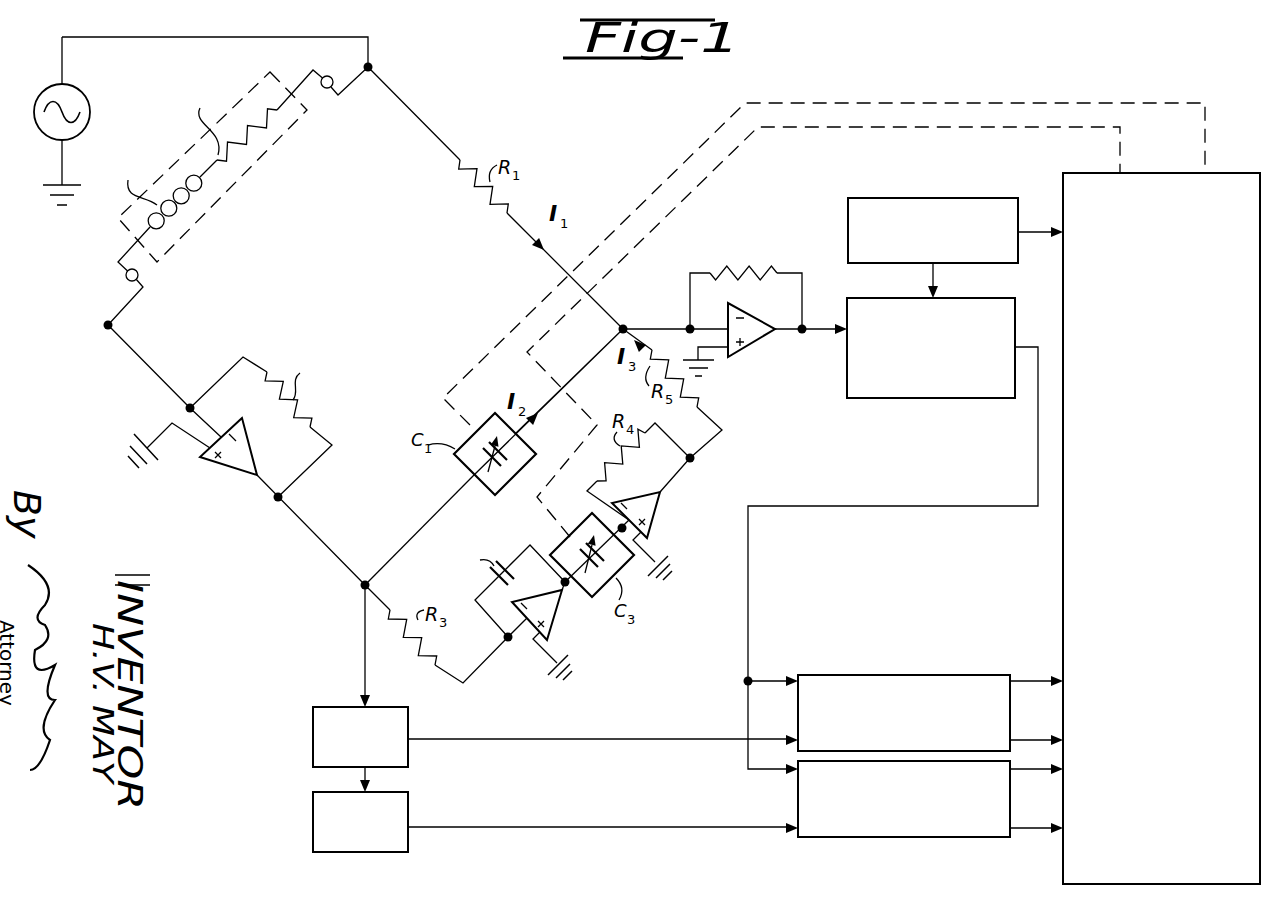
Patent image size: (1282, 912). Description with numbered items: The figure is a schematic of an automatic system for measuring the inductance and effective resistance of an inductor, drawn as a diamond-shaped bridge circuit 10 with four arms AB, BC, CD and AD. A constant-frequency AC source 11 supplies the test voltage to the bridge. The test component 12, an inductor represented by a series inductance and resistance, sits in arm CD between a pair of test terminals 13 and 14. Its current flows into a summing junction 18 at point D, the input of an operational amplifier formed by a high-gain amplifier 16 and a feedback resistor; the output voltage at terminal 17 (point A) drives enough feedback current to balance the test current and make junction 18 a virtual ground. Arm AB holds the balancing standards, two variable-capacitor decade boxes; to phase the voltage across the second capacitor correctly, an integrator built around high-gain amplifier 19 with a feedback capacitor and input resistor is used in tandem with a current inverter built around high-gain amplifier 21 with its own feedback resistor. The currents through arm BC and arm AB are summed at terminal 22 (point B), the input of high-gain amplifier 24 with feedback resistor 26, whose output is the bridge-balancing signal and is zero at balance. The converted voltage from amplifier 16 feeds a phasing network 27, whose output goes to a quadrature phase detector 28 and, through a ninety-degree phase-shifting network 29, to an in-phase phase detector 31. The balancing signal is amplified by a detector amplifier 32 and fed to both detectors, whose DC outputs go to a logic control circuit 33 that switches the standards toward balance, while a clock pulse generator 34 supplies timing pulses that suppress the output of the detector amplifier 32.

The bridge circuit 10 is at (362, 283).
The constant-frequency AC source 11 is at (80, 132).
The test component 12 is at (262, 165).
The test terminal 13 is at (325, 89).
The test terminal 14 is at (126, 276).
The high-gain amplifier 16 is at (207, 463).
The terminal 17 is at (372, 582).
The summing junction 18 is at (186, 404).
The high-gain amplifier 19 is at (556, 606).
The high-gain amplifier 21 is at (655, 497).
The terminal 22 is at (620, 326).
The high-gain amplifier 24 is at (743, 345).
The feedback resistor 26 is at (718, 264).
The phasing network 27 is at (312, 748).
The quadrature phase detector 28 is at (835, 675).
The 90° phase-shifting network 29 is at (312, 827).
The in-phase phase detector 31 is at (810, 838).
The detector amplifier 32 is at (895, 296).
The logic control circuit 33 is at (1063, 583).
The clock pulse generator 34 is at (887, 198).